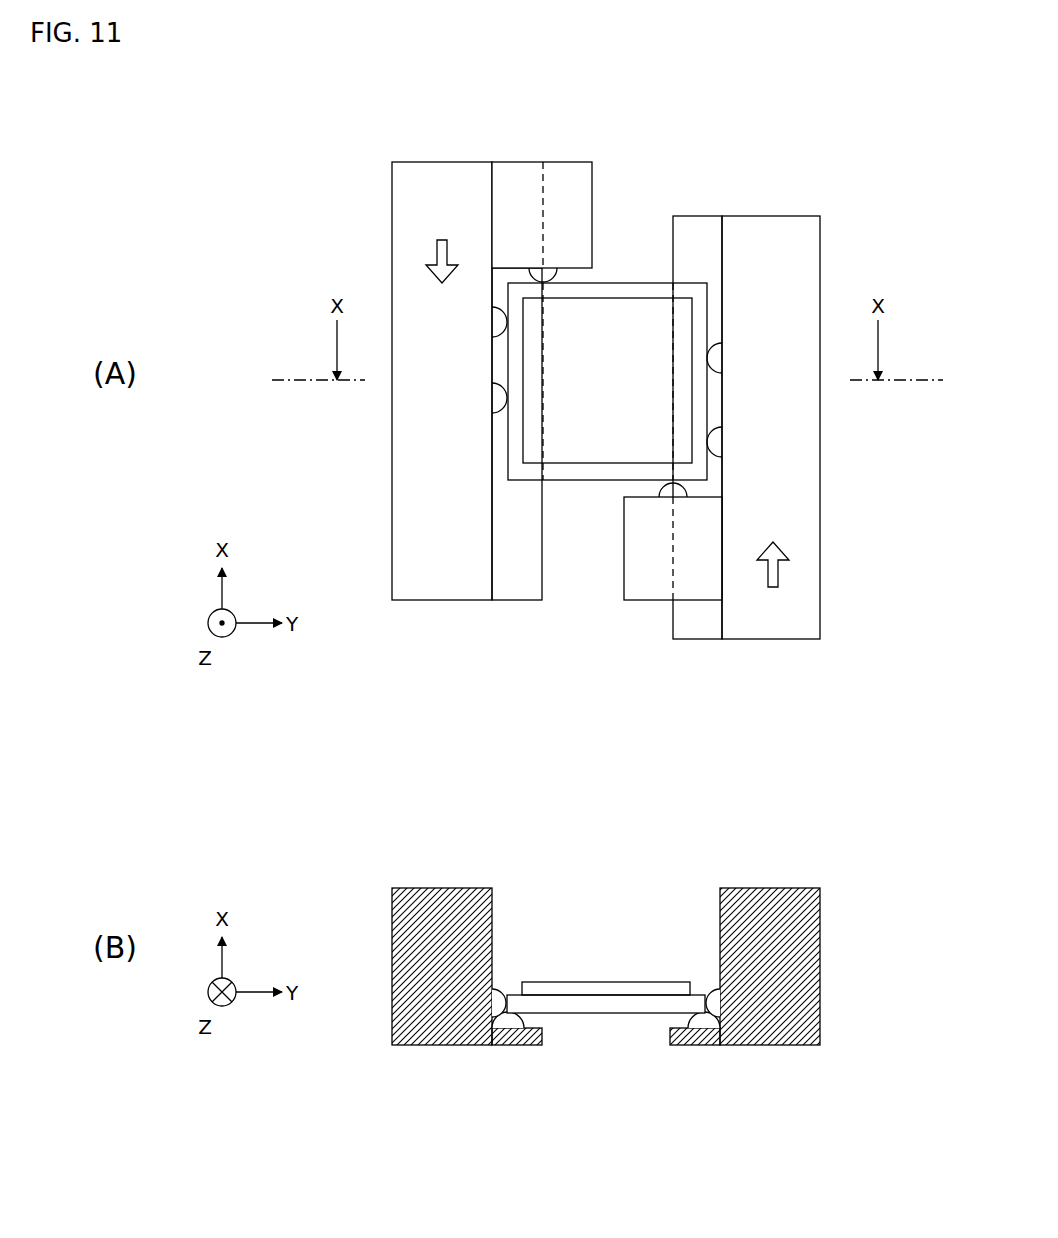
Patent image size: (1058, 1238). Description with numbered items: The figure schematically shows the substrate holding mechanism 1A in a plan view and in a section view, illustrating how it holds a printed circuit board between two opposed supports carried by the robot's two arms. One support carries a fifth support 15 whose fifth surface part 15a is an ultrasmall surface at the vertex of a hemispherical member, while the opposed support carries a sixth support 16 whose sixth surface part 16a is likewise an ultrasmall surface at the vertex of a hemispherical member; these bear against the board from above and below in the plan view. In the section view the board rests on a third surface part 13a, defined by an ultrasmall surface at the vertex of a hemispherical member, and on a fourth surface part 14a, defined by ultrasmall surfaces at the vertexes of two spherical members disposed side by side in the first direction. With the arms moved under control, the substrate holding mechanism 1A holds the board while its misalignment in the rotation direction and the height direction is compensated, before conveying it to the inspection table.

The substrate holding mechanism 1A is at (338, 128).
The third surface part 13a is at (683, 1018).
The fourth surface part 14a is at (530, 1018).
The fifth support 15 is at (650, 583).
The fifth surface part 15a is at (660, 497).
The sixth support 16 is at (568, 178).
The sixth surface part 16a is at (565, 275).